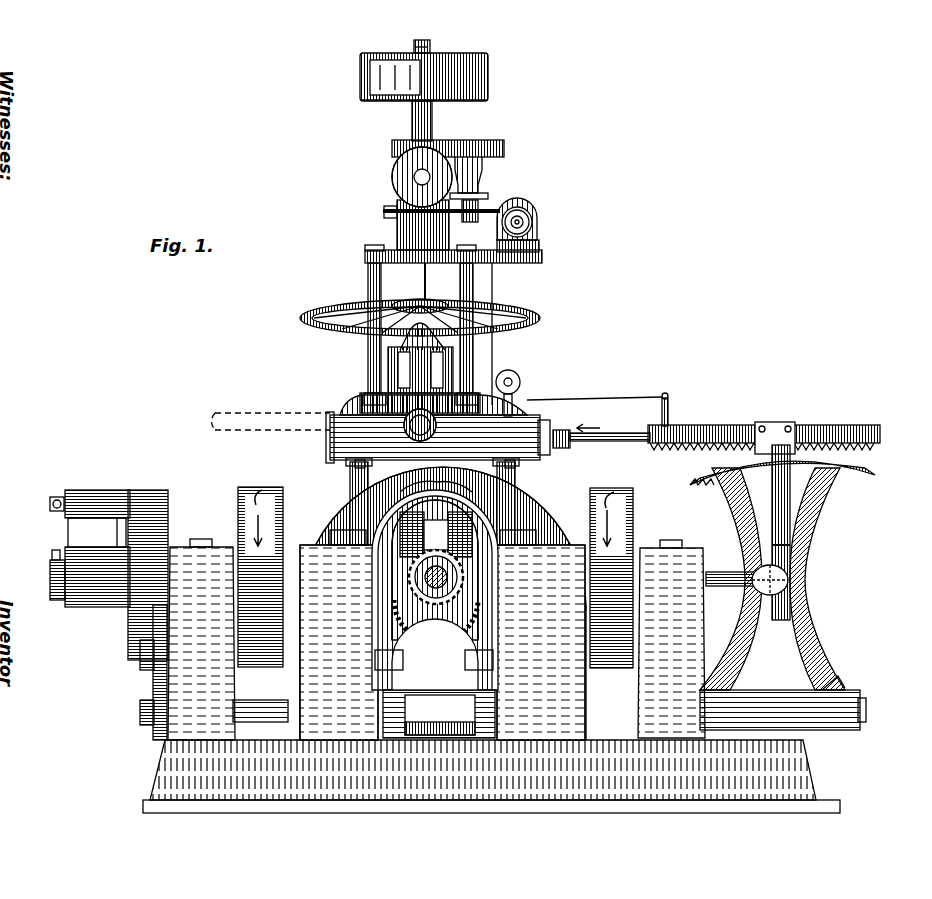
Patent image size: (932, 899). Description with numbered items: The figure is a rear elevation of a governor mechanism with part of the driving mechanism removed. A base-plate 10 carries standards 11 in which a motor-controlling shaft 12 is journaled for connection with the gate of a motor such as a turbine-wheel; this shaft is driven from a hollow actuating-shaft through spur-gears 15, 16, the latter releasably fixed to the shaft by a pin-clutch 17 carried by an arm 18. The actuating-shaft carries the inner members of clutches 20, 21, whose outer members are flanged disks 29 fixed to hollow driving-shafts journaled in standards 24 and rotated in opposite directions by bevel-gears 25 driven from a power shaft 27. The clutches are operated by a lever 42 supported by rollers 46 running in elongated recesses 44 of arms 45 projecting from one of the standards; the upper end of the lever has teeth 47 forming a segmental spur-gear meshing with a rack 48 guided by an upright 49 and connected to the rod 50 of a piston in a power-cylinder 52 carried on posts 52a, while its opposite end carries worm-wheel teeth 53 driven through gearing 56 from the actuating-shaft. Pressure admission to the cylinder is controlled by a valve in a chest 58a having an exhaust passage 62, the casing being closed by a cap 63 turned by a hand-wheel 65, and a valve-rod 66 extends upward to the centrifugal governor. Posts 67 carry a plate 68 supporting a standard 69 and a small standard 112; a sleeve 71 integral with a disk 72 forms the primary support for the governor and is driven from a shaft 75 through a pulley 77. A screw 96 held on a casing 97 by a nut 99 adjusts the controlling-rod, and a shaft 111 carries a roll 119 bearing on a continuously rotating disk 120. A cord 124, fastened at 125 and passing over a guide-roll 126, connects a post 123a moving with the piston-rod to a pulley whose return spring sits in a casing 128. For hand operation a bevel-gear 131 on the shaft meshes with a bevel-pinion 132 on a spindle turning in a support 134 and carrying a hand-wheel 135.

The base-plate 10 is at (805, 770).
The standards 11 is at (228, 676).
The motor-controlling shaft 12 is at (56, 600).
The spur-gear 15 is at (135, 600).
The spur-gear 16 is at (166, 510).
The pin-clutch 17 is at (52, 497).
The arm 18 is at (70, 535).
The clutch 20 is at (260, 564).
The clutch 21 is at (611, 566).
The standards 24 is at (490, 688).
The bevel-gears 25 is at (435, 581).
The shaft 27 is at (436, 596).
The flanged disk 29 is at (312, 490).
The wheel frame 42 is at (790, 620).
The elongated recesses 44 is at (785, 592).
The arms 45 is at (772, 557).
The rollers 46 is at (788, 578).
The teeth 47 is at (835, 466).
The rack 48 is at (830, 438).
The upright 49 is at (790, 527).
The piston-rod 50 is at (600, 441).
The power-cylinder 52 is at (330, 440).
The posts 52a is at (523, 509).
The teeth 53 is at (847, 682).
The gearing 56 is at (153, 680).
The chest 58a is at (388, 368).
The passage 62 is at (380, 410).
The cap 63 is at (395, 325).
The hand-wheel 65 is at (428, 318).
The valve-rod 66 is at (421, 283).
The posts 67 is at (368, 278).
The plate 68 is at (525, 265).
The standard 69 is at (397, 232).
The sleeve 71 is at (432, 120).
The disk 72 is at (470, 100).
The shaft 75 is at (414, 180).
The pulley 77 is at (392, 175).
The screw 96 is at (420, 40).
The casing 97 is at (478, 56).
The nut 99 is at (430, 42).
The shaft 111 is at (498, 208).
The small standard 112 is at (537, 246).
The roll 119 is at (475, 216).
The disk 120 is at (470, 204).
The post 123a is at (668, 410).
The cord 124 is at (598, 399).
The fastening point 125 is at (532, 208).
The guide-roll 126 is at (520, 380).
The casing 128 is at (530, 222).
The bevel-gear 131 is at (454, 482).
The bevel-pinion 132 is at (418, 482).
The support 134 is at (560, 449).
The hand-wheel 135 is at (537, 318).